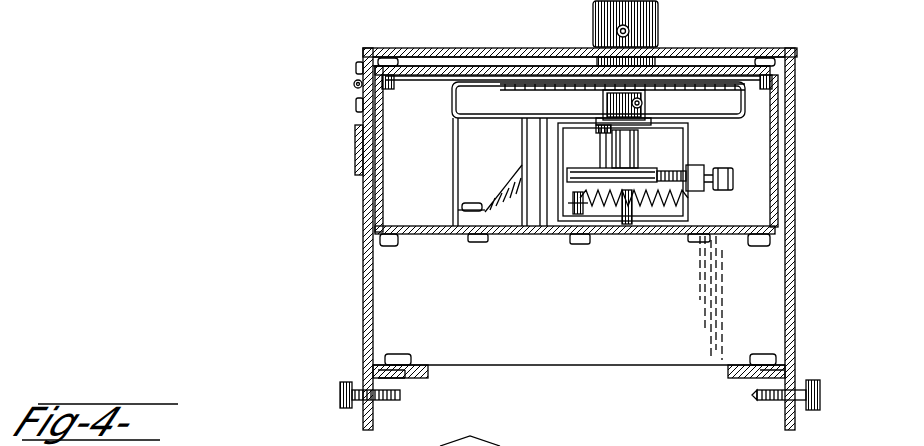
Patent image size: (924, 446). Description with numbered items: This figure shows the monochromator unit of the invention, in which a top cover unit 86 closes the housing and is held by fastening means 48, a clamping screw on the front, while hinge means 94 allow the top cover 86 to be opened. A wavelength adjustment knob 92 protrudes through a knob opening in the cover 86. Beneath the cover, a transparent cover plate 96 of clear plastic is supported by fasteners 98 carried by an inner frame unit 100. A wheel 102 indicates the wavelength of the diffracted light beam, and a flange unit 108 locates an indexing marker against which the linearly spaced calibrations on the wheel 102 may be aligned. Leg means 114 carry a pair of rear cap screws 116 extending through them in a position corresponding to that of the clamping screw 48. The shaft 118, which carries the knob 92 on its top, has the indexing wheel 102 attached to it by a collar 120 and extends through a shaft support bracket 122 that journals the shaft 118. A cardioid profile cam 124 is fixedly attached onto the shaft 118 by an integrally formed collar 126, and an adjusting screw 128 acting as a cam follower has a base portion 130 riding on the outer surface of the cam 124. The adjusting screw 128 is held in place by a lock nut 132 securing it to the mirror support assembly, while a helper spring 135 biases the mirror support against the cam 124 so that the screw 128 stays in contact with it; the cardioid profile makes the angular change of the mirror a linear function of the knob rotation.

The fastening means 48 is at (813, 380).
The top cover unit 86 is at (523, 48).
The wavelength adjustment knob 92 is at (652, 26).
The hinge means 94 is at (356, 84).
The transparent cover plate 96 is at (720, 66).
The fasteners 98 is at (387, 58).
The inner frame unit 100 is at (383, 166).
The wheel 102 is at (528, 90).
The flange unit 108 is at (452, 99).
The leg means 114 is at (377, 422).
The rear cap screws 116 is at (340, 392).
The shaft 118 is at (630, 205).
The collar 120 is at (642, 104).
The shaft support bracket 122 is at (628, 224).
The cardioid profile cam 124 is at (585, 214).
The integrally formed collar 126 is at (638, 156).
The adjusting screw 128 is at (733, 178).
The base portion 130 is at (658, 180).
The lock nut 132 is at (700, 165).
The helper spring 135 is at (614, 236).